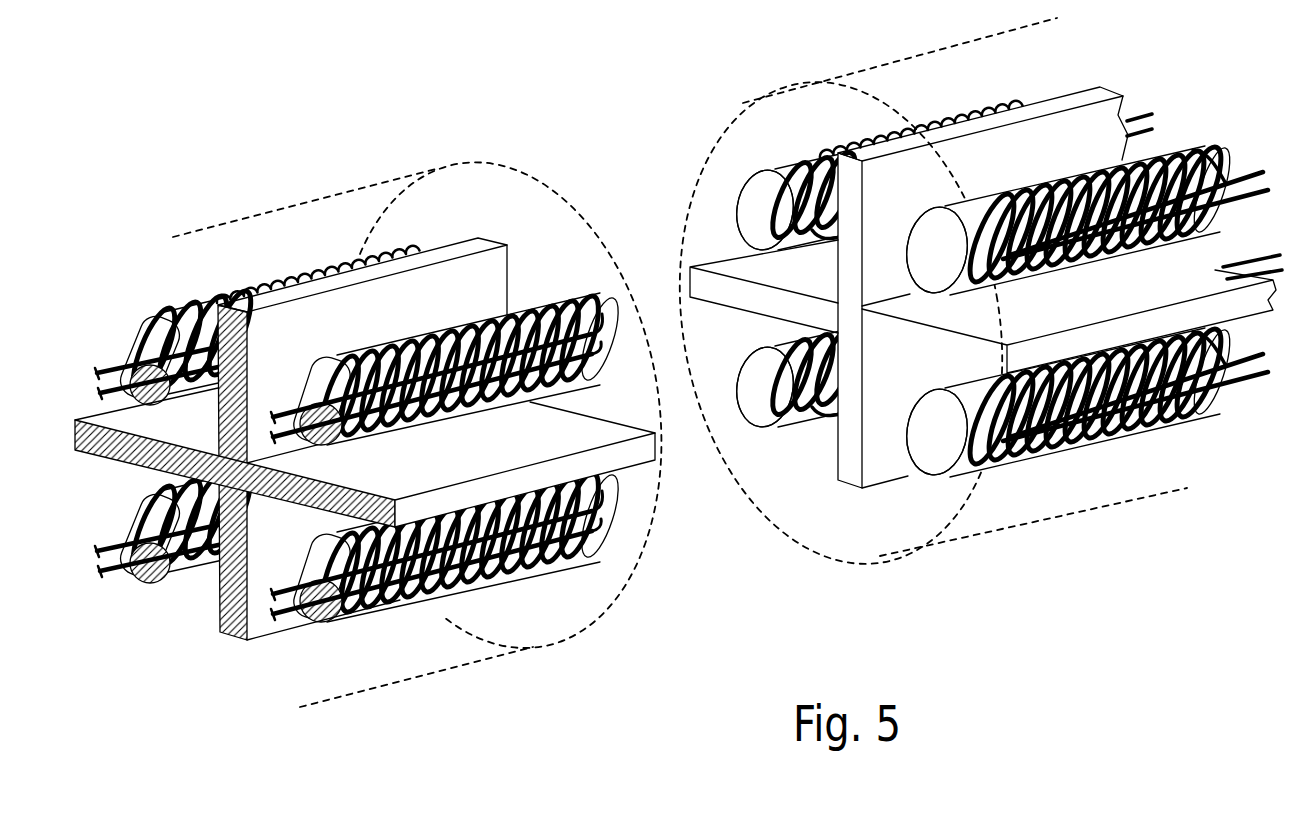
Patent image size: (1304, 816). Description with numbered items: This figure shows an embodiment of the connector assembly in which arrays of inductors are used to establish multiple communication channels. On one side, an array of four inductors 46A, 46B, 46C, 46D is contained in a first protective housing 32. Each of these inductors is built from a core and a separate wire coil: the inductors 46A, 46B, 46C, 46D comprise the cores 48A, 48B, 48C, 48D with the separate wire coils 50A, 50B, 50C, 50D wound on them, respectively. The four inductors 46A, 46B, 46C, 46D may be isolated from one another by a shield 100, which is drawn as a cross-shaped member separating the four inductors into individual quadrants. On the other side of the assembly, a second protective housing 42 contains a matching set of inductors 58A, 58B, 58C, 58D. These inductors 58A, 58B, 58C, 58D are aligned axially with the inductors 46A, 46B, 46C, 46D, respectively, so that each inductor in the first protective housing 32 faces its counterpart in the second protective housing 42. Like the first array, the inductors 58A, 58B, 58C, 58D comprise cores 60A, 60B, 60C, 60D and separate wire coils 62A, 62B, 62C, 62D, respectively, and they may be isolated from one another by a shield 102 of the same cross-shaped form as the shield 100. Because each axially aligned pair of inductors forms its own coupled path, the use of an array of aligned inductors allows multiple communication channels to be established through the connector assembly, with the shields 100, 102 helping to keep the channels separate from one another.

The first protective housing 32 is at (477, 665).
The second protective housing 42 is at (987, 540).
The shield 100 is at (500, 244).
The shield 102 is at (1077, 93).
The inductor 46A is at (460, 312).
The inductor 46B is at (420, 612).
The inductor 46C is at (182, 590).
The inductor 46D is at (178, 298).
The core 48A is at (323, 438).
The core 48B is at (323, 620).
The core 48C is at (140, 580).
The core 48D is at (152, 398).
The wire coil 50A is at (541, 300).
The wire coil 50B is at (570, 567).
The wire coil 50C is at (152, 490).
The wire coil 50D is at (283, 292).
The inductor 58A is at (1183, 138).
The inductor 58B is at (1123, 448).
The inductor 58C is at (792, 438).
The inductor 58D is at (757, 153).
The core 60A is at (927, 247).
The core 60B is at (930, 433).
The core 60C is at (757, 397).
The core 60D is at (760, 213).
The wire coil 62A is at (1073, 263).
The wire coil 62B is at (1187, 417).
The wire coil 62C is at (793, 333).
The wire coil 62D is at (803, 146).